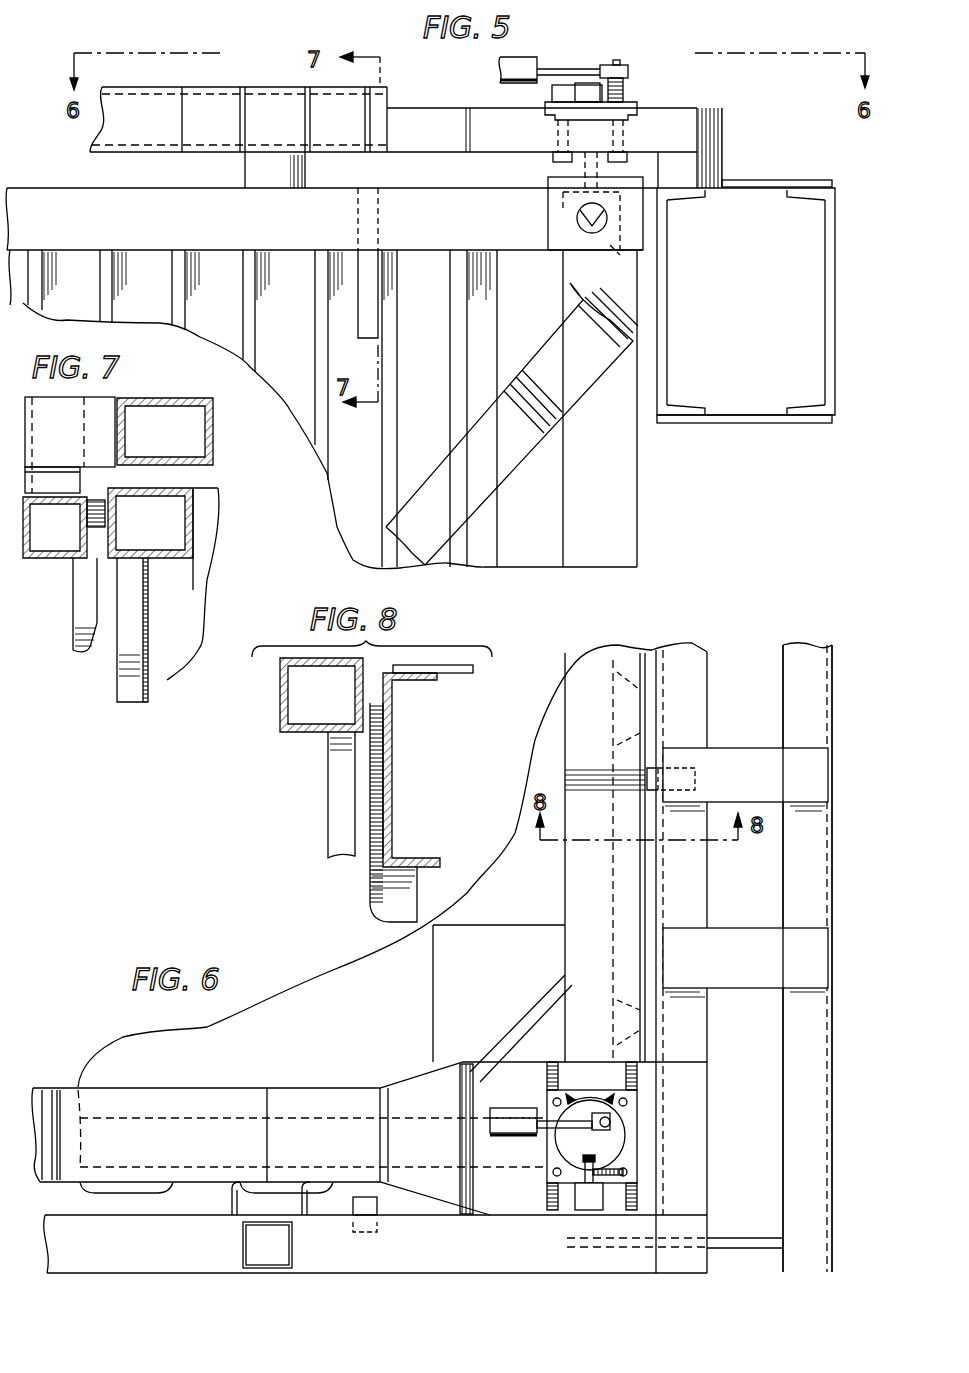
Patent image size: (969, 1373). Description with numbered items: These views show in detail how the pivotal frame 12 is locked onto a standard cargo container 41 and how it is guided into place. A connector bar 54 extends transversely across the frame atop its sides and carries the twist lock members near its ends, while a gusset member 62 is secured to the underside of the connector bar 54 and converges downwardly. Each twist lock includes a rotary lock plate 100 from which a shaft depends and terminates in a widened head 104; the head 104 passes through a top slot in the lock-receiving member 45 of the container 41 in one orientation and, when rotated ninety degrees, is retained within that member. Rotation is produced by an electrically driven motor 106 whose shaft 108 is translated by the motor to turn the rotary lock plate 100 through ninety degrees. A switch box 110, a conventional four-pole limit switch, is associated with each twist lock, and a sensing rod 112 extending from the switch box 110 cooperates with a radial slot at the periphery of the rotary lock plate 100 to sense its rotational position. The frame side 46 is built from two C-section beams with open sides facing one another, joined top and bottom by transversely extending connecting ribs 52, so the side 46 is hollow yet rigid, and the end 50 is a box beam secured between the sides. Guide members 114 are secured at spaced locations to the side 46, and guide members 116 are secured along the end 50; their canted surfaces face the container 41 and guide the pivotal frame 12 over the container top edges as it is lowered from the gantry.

In FIG. 5, the pivotal frame 12 is at (708, 128).
In FIG. 5, the cargo container 41 is at (622, 507).
In FIG. 7, the cargo container 41 is at (167, 683).
In FIG. 5, the lock-receiving member 45 is at (550, 210).
In FIG. 5, the side 46 is at (836, 318).
In FIG. 8, the side 46 is at (393, 738).
In FIG. 6, the side 46 is at (810, 717).
In FIG. 7, the end 50 is at (27, 560).
In FIG. 6, the end 50 is at (358, 1263).
In FIG. 5, the connecting rib 52 is at (767, 181).
In FIG. 8, the connecting rib 52 is at (460, 680).
In FIG. 6, the connecting rib 52 is at (740, 760).
In FIG. 5, the connector bar 54 is at (110, 133).
In FIG. 6, the connector bar 54 is at (369, 1138).
In FIG. 5, the gusset member 62 is at (485, 487).
In FIG. 5, the rotary lock plate 100 is at (630, 95).
In FIG. 6, the rotary lock plate 100 is at (563, 1148).
In FIG. 5, the widened head 104 is at (612, 222).
In FIG. 5, the electrically driven motor 106 is at (497, 70).
In FIG. 6, the electrically driven motor 106 is at (490, 1126).
In FIG. 5, the shaft 108 is at (563, 67).
In FIG. 6, the shaft 108 is at (553, 1110).
In FIG. 5, the switch box 110 is at (550, 92).
In FIG. 6, the switch box 110 is at (583, 1200).
In FIG. 6, the sensing rod 112 is at (632, 1172).
In FIG. 8, the guide member 114 is at (387, 913).
In FIG. 6, the guide member 114 is at (678, 770).
In FIG. 5, the guide member 116 is at (365, 310).
In FIG. 7, the guide member 116 is at (78, 648).
In FIG. 6, the guide member 116 is at (377, 1232).